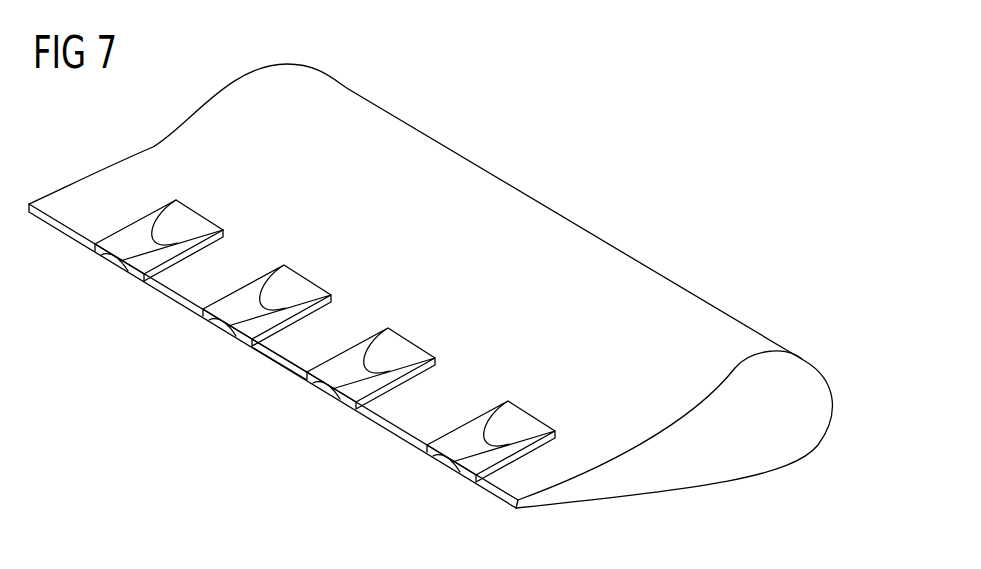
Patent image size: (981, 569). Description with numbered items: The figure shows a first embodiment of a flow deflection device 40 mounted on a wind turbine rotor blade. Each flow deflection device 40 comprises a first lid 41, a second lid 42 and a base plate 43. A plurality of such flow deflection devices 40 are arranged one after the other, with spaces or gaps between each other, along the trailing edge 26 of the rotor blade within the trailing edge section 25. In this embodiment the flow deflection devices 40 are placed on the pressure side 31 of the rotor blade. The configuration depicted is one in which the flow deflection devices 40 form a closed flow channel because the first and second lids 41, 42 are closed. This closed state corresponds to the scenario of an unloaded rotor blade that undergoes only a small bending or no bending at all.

The pressure side 31 is at (629, 270).
The trailing edge 26 is at (390, 428).
The trailing edge section 25 is at (293, 350).
The flow deflection device 40 is at (142, 228).
The first lid 41 is at (125, 237).
The second lid 42 is at (155, 256).
The base plate 43 is at (197, 213).